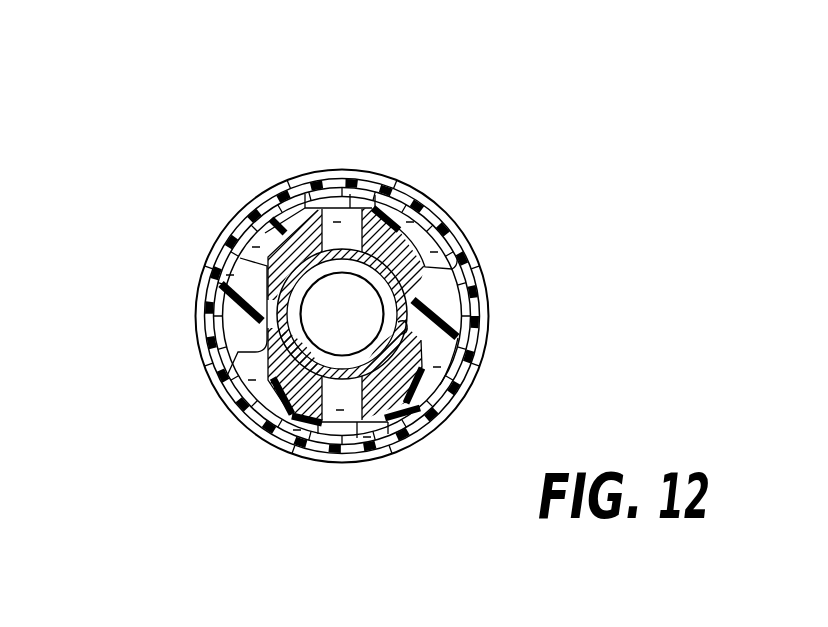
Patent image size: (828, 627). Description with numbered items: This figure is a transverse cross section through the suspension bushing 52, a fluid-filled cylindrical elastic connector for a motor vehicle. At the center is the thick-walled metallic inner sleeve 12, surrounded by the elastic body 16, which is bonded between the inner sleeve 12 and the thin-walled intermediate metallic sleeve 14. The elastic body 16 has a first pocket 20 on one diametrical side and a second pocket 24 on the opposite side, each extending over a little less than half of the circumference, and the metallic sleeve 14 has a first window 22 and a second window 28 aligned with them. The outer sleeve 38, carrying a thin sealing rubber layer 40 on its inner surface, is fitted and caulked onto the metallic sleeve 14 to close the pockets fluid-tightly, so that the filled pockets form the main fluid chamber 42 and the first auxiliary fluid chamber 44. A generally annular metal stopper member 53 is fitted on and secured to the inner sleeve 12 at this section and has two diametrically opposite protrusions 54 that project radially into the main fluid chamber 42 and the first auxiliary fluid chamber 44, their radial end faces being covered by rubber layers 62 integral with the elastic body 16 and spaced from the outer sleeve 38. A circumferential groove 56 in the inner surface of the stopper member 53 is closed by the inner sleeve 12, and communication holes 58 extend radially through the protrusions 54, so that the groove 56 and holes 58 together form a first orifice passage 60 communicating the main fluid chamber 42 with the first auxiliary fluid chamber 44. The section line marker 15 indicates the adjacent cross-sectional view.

The inner sleeve 12 is at (378, 348).
The metallic sleeve 14 is at (463, 292).
The section line 15 is at (115, 346).
The elastic body 16 is at (237, 327).
The first pocket 20 is at (430, 250).
The first window 22 is at (457, 260).
The second pocket 24 is at (232, 378).
The second window 28 is at (247, 377).
The outer sleeve 38 is at (395, 183).
The sealing rubber layer 40 is at (423, 433).
The main fluid chamber 42 is at (262, 228).
The first auxiliary fluid chamber 44 is at (272, 413).
The suspension bushing 52 is at (442, 104).
The stopper member 53 is at (272, 285).
The protrusions 54 is at (300, 216).
The circumferential groove 56 is at (396, 324).
The communication holes 58 is at (355, 208).
The first orifice passage 60 is at (262, 238).
The rubber layers 62 is at (304, 212).